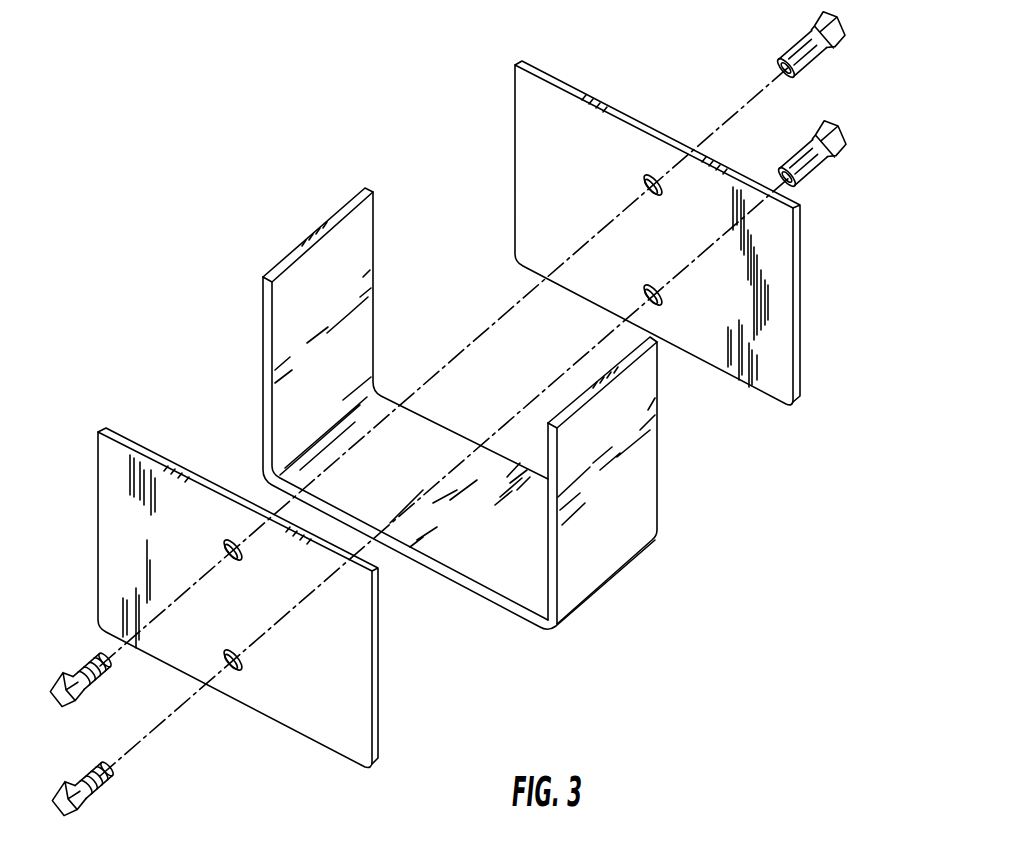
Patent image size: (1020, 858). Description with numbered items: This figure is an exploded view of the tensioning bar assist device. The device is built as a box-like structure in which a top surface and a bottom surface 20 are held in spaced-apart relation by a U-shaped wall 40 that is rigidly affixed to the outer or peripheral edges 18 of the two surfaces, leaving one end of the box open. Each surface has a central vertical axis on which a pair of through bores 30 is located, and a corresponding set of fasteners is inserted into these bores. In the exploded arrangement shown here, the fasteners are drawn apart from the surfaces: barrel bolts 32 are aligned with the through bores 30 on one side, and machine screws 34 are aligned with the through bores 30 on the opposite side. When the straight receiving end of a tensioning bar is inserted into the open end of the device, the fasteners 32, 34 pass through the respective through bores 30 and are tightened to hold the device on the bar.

The outer or peripheral edge 18 is at (383, 650).
The bottom surface 20 is at (753, 343).
The through bore 30 is at (240, 650).
The fastener 32 is at (832, 118).
The fastener 34 is at (68, 782).
The U-shaped wall 40 is at (642, 473).